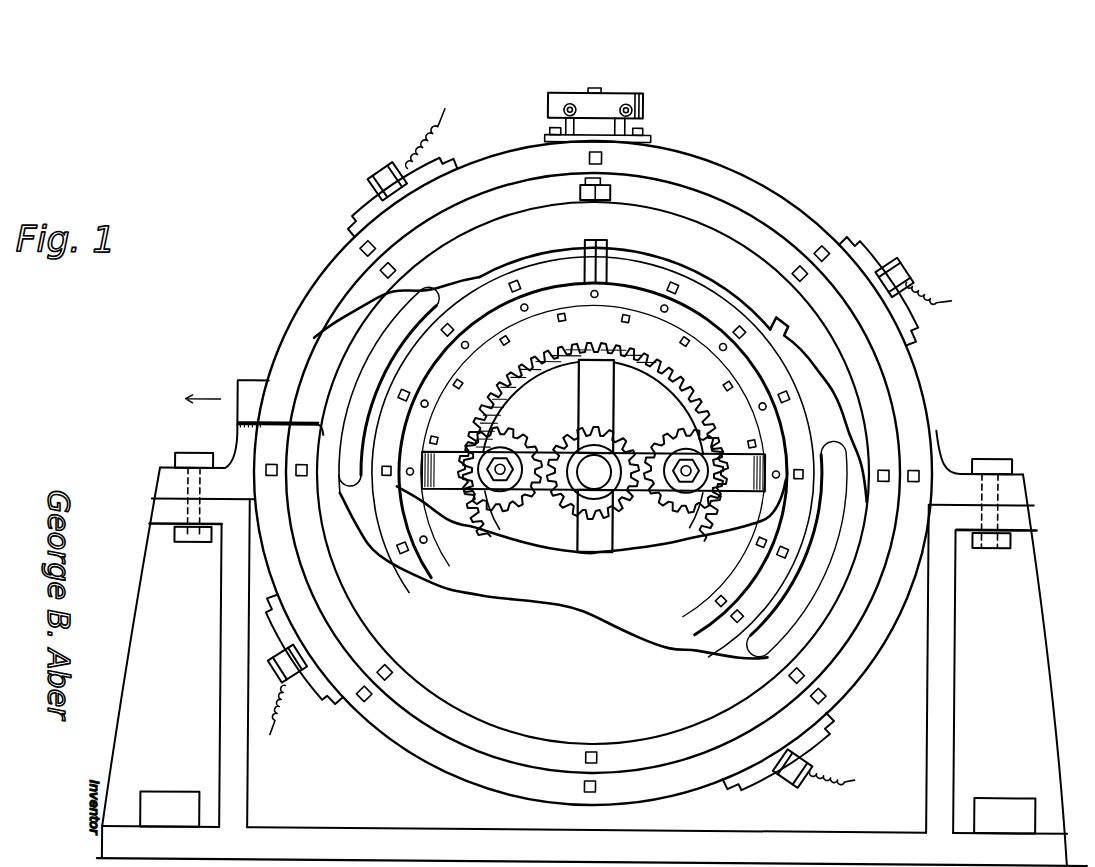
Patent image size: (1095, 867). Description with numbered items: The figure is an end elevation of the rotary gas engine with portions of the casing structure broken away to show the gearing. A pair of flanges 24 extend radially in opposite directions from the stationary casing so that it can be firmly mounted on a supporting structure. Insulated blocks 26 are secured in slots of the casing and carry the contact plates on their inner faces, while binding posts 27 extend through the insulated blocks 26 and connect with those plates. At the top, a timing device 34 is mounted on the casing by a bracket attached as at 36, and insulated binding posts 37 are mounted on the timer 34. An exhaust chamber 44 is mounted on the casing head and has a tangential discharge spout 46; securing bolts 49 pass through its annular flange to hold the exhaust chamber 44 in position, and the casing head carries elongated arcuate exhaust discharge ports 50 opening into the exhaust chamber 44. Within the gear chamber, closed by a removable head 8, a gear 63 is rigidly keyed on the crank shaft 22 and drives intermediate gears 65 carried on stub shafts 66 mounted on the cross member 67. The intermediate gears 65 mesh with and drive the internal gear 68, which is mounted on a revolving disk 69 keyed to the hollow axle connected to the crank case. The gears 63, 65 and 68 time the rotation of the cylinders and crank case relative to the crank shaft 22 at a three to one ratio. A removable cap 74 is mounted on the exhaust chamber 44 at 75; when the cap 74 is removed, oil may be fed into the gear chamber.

The removable head 8 is at (592, 456).
The crank shaft 22 is at (598, 471).
The flanges 24 is at (165, 472).
The insulated blocks 26 is at (365, 213).
The binding posts 27 is at (368, 190).
The timing device 34 is at (550, 105).
The bracket attachment 36 is at (548, 136).
The binding posts 37 is at (623, 104).
The exhaust chamber 44 is at (590, 453).
The tangential discharge spout 46 is at (245, 383).
The securing bolts 49 is at (790, 677).
The arcuate exhaust discharge ports 50 is at (420, 296).
The gear 63 is at (594, 428).
The intermediate gears 65 is at (512, 444).
The stub shafts 66 is at (490, 470).
The cross member 67 is at (593, 472).
The internal gear 68 is at (593, 430).
The revolving disk 69 is at (527, 370).
The removable cap 74 is at (598, 185).
The cap mounting 75 is at (610, 196).